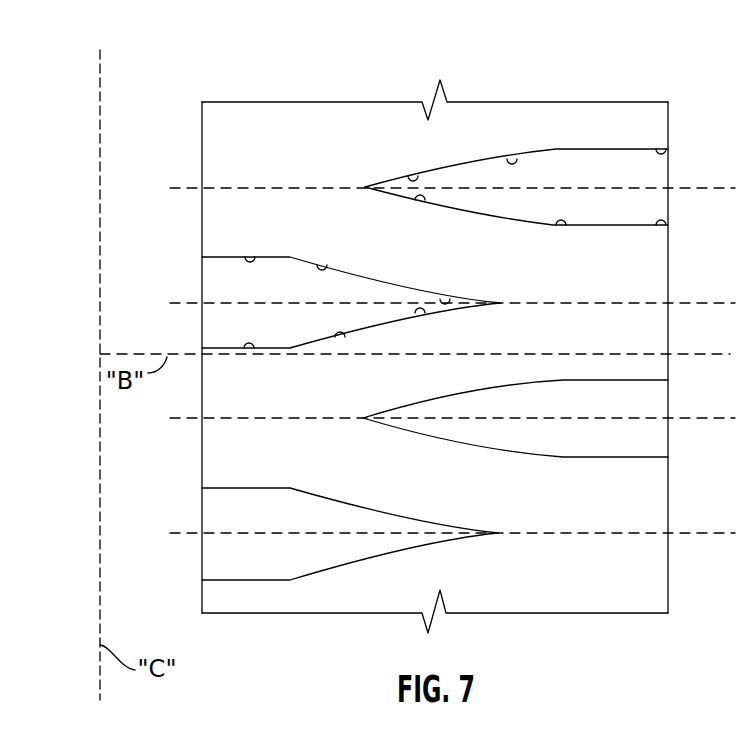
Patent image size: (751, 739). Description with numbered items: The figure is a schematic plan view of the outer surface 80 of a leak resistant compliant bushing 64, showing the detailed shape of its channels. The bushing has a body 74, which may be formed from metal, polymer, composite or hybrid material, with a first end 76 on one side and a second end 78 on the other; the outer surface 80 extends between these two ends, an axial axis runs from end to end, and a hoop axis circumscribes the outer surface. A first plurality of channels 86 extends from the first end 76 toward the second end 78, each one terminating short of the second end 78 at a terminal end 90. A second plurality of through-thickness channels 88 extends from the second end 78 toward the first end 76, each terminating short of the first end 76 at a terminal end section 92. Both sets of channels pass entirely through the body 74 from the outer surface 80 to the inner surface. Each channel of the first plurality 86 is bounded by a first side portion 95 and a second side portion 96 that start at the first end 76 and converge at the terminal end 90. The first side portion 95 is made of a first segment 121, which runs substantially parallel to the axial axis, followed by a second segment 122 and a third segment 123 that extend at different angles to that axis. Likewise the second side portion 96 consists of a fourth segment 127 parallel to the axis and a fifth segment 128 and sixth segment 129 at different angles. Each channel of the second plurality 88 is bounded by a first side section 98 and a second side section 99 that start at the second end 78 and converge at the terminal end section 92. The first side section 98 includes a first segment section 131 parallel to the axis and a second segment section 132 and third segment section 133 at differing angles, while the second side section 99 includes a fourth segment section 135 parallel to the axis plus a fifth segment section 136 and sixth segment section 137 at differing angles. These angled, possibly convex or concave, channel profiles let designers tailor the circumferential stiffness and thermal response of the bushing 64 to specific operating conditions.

The leak resistant compliant bushing 64 is at (606, 630).
The body 74 is at (648, 578).
The first end 76 is at (202, 137).
The second end 78 is at (670, 124).
The outer surface 80 is at (277, 118).
The first plurality of channels 86 is at (197, 278).
The second plurality of through-thickness channels 88 is at (674, 207).
The terminal end 90 is at (500, 306).
The terminal end section 92 is at (365, 186).
The first side portion 95 is at (274, 264).
The second side portion 96 is at (274, 338).
The first side section 98 is at (556, 154).
The second side section 99 is at (541, 218).
The first segment 121 is at (250, 255).
The second segment 122 is at (322, 263).
The third segment 123 is at (445, 296).
The fourth segment 127 is at (250, 352).
The fifth segment 128 is at (340, 340).
The sixth segment 129 is at (420, 316).
The first segment section 131 is at (667, 153).
The second segment section 132 is at (512, 156).
The third segment section 133 is at (413, 172).
The fourth segment section 135 is at (668, 226).
The fifth segment section 136 is at (562, 228).
The sixth segment section 137 is at (420, 205).